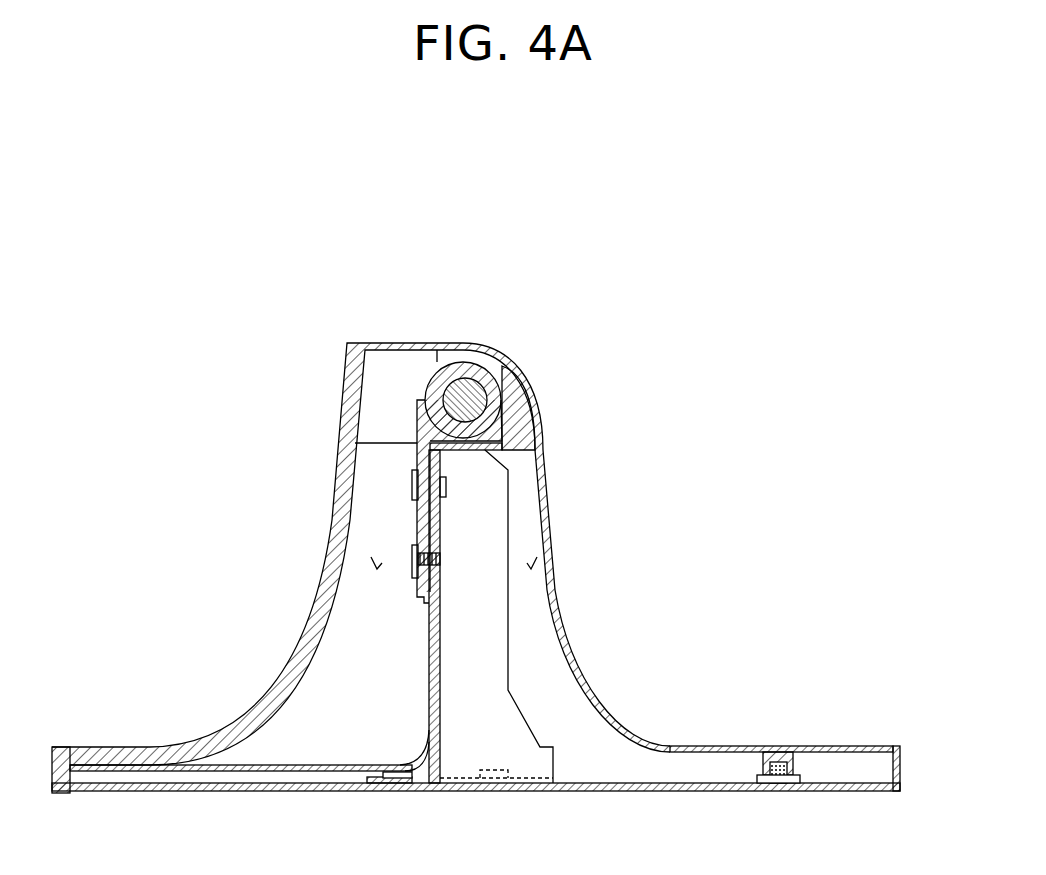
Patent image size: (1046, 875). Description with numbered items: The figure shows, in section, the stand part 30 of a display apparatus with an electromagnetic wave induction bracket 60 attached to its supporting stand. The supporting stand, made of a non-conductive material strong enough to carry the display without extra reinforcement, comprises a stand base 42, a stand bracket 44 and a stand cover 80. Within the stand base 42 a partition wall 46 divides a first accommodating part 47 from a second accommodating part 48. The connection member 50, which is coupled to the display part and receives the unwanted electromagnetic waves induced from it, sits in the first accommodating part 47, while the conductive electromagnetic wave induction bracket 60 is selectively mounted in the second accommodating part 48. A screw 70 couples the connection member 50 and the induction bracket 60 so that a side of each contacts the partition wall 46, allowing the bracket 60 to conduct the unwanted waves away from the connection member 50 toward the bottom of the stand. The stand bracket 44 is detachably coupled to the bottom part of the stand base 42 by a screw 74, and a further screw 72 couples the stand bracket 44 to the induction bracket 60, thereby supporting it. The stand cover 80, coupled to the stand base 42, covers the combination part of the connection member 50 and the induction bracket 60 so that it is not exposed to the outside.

The stand part 30 is at (270, 345).
The stand base 42 is at (727, 746).
The stand bracket 44 is at (250, 793).
The partition wall 46 is at (430, 640).
The first accommodating part 47 is at (375, 568).
The second accommodating part 48 is at (530, 562).
The connection member 50 is at (415, 522).
The electromagnetic wave induction bracket 60 is at (443, 505).
The screw 70 is at (412, 478).
The screw 72 is at (398, 791).
The screw 74 is at (780, 791).
The stand cover 80 is at (152, 747).